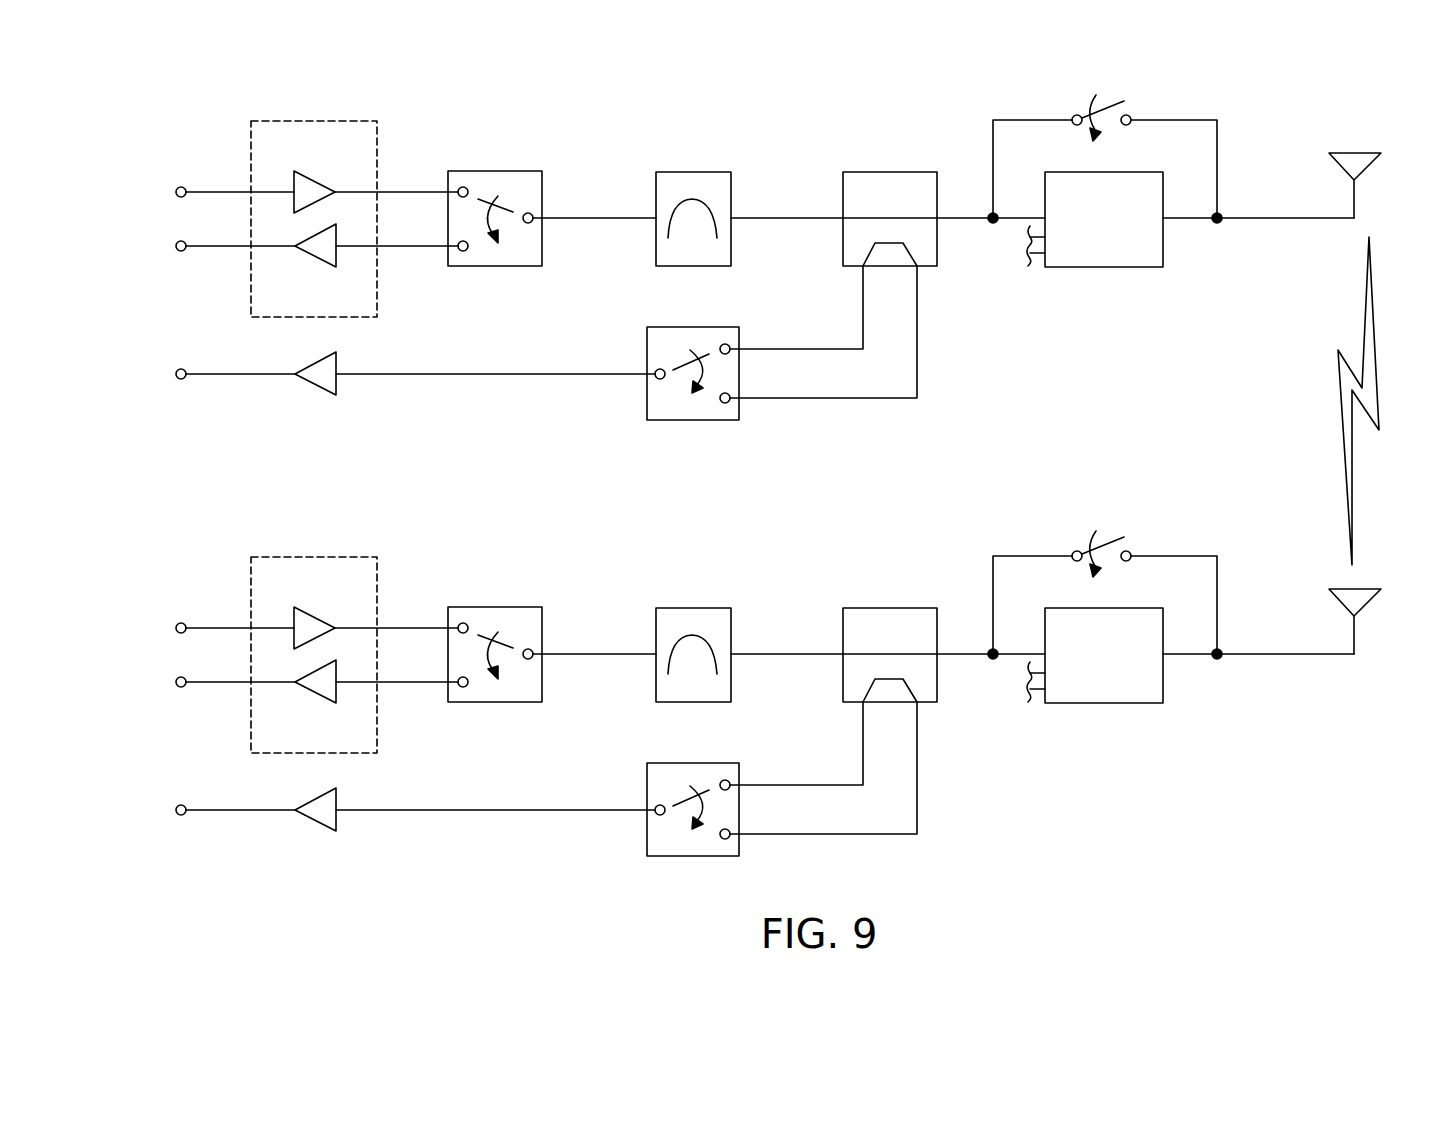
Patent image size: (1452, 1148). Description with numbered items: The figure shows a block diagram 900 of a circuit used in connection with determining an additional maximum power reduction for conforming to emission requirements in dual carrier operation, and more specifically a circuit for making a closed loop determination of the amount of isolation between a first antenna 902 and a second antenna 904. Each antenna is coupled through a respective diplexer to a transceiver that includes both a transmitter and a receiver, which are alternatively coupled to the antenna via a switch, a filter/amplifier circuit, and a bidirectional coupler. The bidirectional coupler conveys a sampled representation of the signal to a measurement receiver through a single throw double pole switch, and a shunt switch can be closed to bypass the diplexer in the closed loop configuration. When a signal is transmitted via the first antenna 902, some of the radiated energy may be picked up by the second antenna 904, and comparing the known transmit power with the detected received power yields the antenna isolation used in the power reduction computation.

The block diagram 900 is at (196, 83).
The first antenna 902 is at (1359, 198).
The second antenna 904 is at (1378, 622).